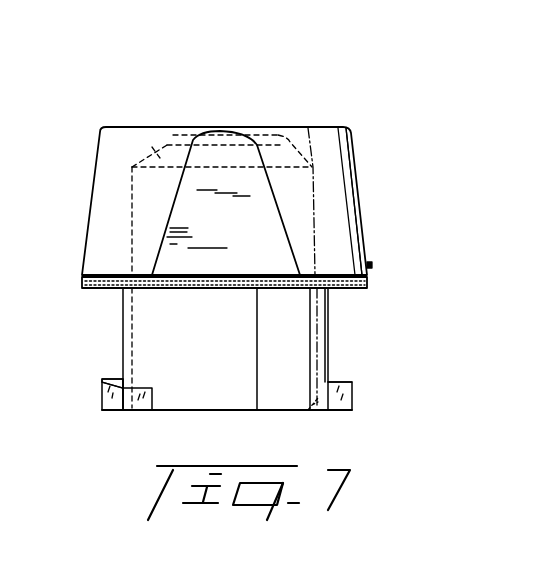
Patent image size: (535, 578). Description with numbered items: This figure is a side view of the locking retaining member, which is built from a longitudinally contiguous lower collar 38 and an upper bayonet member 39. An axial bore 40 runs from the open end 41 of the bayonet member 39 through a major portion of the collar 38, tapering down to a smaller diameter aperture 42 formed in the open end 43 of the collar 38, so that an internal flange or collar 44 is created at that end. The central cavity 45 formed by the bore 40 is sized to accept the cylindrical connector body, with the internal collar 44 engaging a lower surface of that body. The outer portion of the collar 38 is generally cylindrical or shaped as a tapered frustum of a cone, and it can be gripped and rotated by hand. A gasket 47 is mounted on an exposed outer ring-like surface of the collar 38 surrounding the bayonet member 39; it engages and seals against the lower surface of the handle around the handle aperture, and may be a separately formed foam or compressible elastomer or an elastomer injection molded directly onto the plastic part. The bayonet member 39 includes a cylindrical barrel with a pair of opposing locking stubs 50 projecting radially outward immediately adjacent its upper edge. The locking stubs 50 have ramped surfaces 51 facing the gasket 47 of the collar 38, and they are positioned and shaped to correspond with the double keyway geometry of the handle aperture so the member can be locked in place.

The lower collar 38 is at (343, 155).
The upper bayonet member 39 is at (329, 324).
The axial bore 40 is at (308, 418).
The open end of bayonet member 41 is at (175, 422).
The smaller diameter aperture 42 is at (177, 130).
The open end of collar 43 is at (320, 120).
The internal flange or collar 44 is at (152, 147).
The central cavity 45 is at (147, 318).
The gasket 47 is at (368, 287).
The locking stubs 50 is at (102, 405).
The ramped surfaces 51 is at (110, 380).